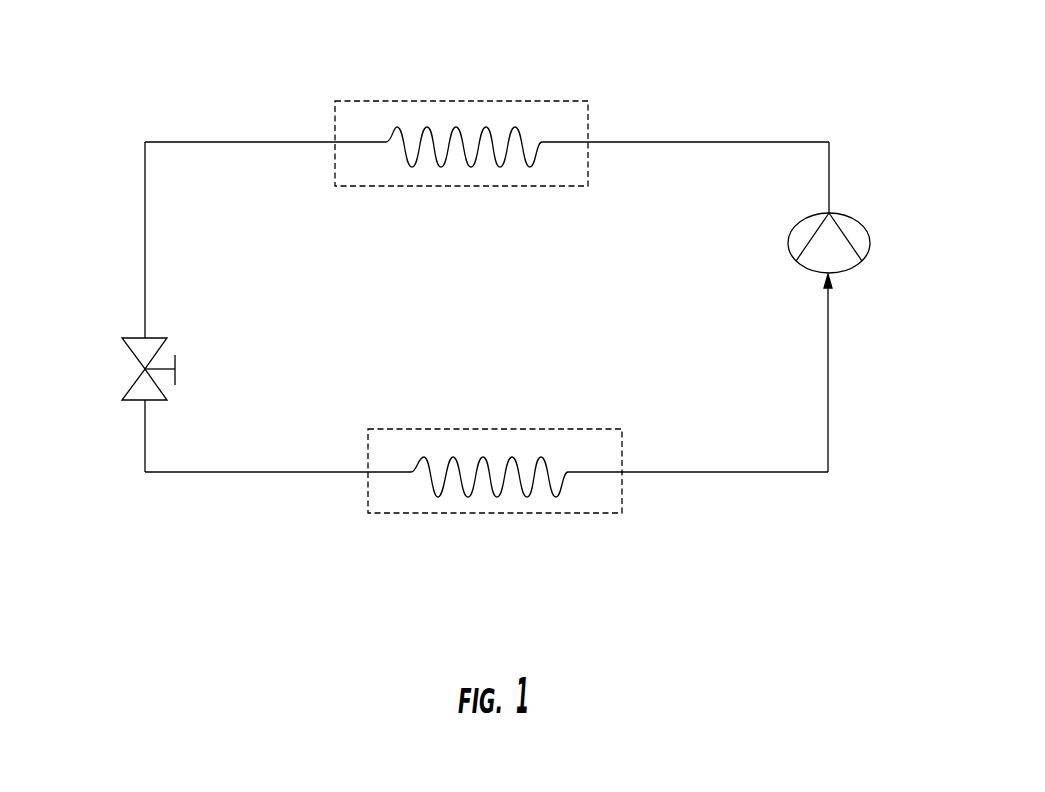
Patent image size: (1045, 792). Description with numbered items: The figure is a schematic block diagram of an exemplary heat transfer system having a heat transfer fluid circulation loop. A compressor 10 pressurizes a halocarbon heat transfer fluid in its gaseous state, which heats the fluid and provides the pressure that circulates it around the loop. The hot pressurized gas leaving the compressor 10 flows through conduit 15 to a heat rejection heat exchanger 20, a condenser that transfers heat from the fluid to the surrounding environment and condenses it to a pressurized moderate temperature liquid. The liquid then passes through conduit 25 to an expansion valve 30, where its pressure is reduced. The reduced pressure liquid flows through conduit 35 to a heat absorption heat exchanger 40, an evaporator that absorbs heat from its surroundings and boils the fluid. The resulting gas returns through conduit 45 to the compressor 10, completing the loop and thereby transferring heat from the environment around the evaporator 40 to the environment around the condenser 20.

The compressor 10 is at (870, 240).
The conduit 15 is at (715, 142).
The heat rejection heat exchanger 20 is at (583, 123).
The conduit 25 is at (192, 142).
The expansion valve 30 is at (143, 369).
The conduit 35 is at (293, 466).
The heat absorption heat exchanger 40 is at (477, 513).
The conduit 45 is at (713, 460).